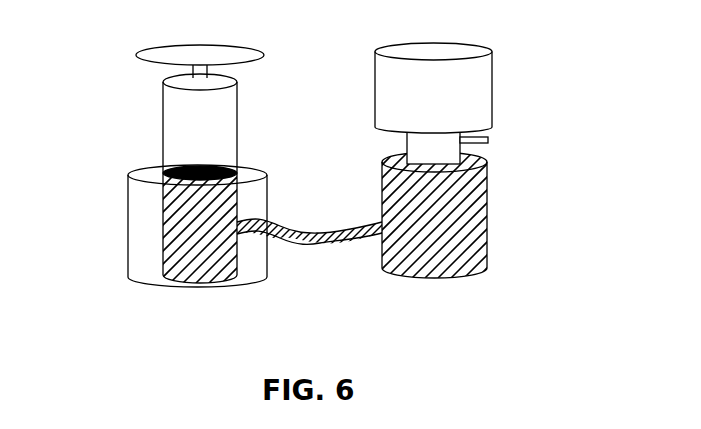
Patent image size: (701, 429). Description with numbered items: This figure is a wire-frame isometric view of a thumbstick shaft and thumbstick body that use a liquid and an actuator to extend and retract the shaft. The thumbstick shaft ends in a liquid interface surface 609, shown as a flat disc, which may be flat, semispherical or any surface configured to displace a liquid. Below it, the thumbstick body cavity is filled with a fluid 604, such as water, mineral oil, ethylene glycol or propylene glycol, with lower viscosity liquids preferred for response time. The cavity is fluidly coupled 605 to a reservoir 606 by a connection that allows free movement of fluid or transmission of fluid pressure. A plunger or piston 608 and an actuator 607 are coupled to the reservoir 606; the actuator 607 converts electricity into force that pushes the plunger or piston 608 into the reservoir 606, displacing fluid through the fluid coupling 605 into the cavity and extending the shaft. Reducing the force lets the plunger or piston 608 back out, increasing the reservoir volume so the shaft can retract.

The fluid 604 is at (166, 270).
The fluid coupling 605 is at (342, 237).
The reservoir 606 is at (487, 237).
The actuator 607 is at (492, 85).
The plunger or piston 608 is at (488, 140).
The liquid interface surface 609 is at (177, 168).